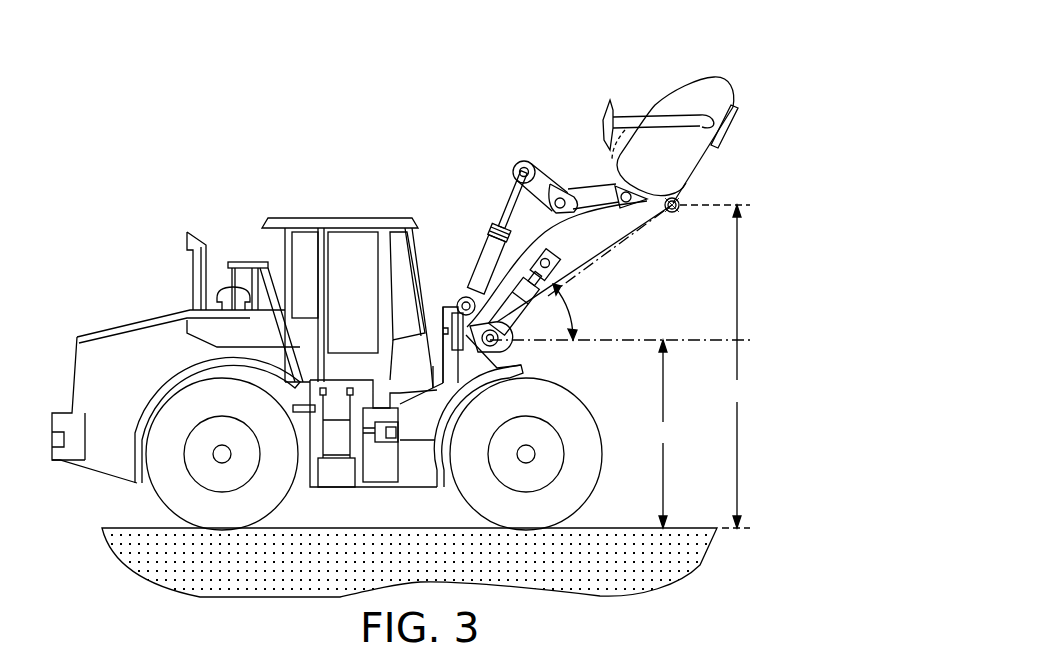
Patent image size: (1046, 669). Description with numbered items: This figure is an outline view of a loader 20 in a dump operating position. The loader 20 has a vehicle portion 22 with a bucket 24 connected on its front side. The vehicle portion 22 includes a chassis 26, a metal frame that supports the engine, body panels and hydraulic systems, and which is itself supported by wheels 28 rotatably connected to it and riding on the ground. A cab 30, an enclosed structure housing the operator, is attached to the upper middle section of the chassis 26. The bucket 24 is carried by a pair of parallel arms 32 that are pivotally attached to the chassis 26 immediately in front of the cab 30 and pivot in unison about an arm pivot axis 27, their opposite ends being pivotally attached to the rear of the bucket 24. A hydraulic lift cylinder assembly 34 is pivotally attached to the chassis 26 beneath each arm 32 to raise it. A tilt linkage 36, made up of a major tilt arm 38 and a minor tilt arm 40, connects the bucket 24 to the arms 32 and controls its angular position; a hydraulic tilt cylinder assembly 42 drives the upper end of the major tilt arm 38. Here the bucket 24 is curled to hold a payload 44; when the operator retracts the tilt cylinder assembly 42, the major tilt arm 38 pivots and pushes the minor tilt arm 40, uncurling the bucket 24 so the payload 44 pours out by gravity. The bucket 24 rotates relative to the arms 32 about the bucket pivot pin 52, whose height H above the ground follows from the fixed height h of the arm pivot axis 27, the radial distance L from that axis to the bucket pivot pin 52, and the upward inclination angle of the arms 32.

The loader 20 is at (674, 297).
The vehicle portion 22 is at (146, 299).
The bucket 24 is at (649, 163).
The chassis 26 is at (469, 375).
The arm pivot axis 27 is at (443, 308).
The wheels 28 is at (289, 458).
The cab 30 is at (365, 265).
The arms 32 is at (570, 250).
The lift cylinder assembly 34 is at (523, 305).
The tilt linkage 36 is at (547, 156).
The major tilt arm 38 is at (515, 182).
The minor tilt arm 40 is at (612, 203).
The tilt cylinder assembly 42 is at (487, 253).
The payload 44 is at (720, 108).
The bucket pivot pin 52 is at (677, 208).